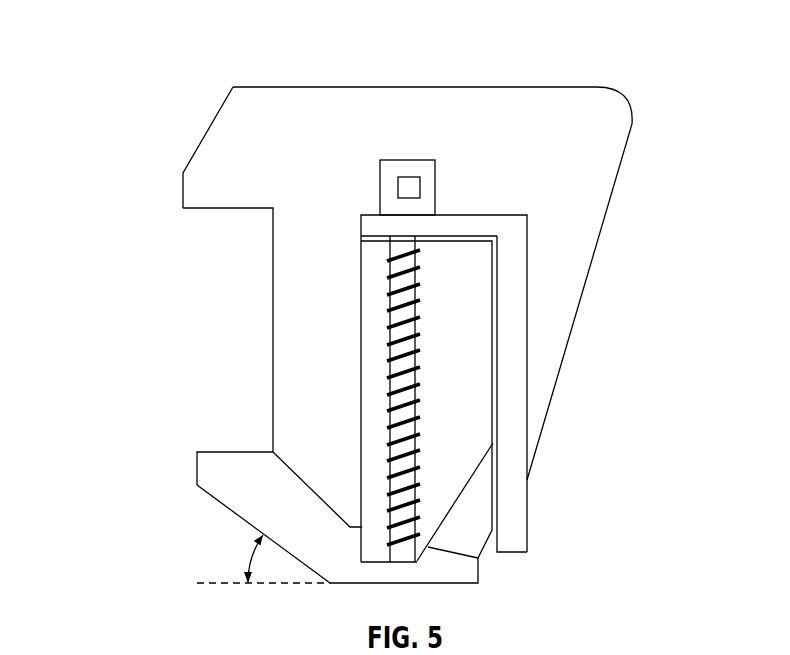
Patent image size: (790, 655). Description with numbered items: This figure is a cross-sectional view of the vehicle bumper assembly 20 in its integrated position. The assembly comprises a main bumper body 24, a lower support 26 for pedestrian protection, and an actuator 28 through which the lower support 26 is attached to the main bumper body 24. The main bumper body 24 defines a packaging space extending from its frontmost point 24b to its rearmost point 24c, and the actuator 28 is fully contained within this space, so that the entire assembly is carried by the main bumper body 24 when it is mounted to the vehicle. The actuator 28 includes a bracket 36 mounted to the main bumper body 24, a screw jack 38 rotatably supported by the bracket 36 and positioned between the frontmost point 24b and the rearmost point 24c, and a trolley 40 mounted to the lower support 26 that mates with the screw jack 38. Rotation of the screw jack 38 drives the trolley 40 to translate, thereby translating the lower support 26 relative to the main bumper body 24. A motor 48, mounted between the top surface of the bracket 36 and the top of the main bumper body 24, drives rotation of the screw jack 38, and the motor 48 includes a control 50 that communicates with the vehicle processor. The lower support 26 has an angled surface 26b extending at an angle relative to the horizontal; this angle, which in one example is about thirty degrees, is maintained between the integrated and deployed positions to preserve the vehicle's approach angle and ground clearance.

The vehicle bumper assembly 20 is at (99, 27).
The main bumper body 24 is at (255, 87).
The frontmost point 24b is at (183, 192).
The rearmost point 24c is at (632, 120).
The lower support 26 is at (197, 468).
The angled surface 26b is at (210, 497).
The actuators 28 is at (490, 203).
The bracket 36 is at (517, 400).
The screw jack 38 is at (393, 353).
The trolley 40 is at (447, 462).
The motor 48 is at (418, 160).
The control 50 is at (408, 177).